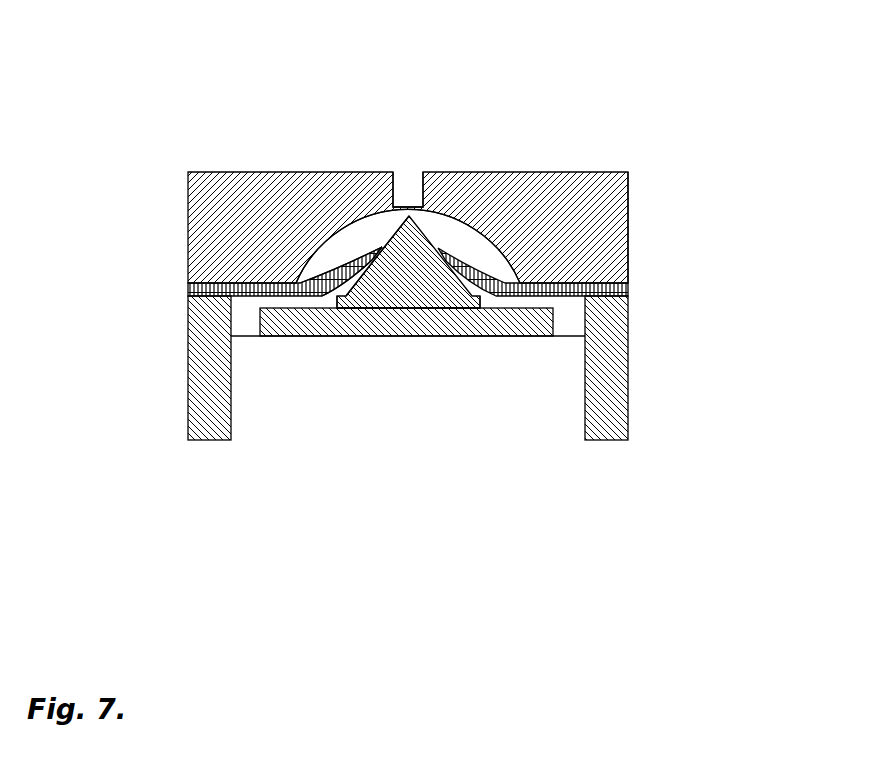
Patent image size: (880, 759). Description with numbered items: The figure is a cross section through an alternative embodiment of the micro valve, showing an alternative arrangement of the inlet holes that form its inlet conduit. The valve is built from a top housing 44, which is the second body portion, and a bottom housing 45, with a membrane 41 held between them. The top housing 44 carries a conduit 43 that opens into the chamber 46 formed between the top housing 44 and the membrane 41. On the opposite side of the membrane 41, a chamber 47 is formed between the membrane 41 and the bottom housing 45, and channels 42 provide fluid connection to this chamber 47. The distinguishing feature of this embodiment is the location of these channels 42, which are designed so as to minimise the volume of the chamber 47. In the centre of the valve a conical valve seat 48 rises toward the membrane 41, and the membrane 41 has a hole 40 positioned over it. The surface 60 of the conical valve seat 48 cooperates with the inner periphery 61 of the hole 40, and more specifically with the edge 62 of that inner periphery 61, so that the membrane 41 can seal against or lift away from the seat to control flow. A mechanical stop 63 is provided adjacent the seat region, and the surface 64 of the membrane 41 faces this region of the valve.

The hole in the membrane 40 is at (374, 236).
The membrane 41 is at (186, 290).
The channels 42 is at (562, 346).
The conduit in the top housing 43 is at (410, 168).
The top housing 44 is at (187, 170).
The bottom housing 45 is at (630, 339).
The chamber between the top housing and membrane 46 is at (488, 236).
The chamber between the membrane and the bottom housing 47 is at (318, 303).
The conical valve seat 48 is at (418, 285).
The surface of the conical valve seat 60 is at (433, 245).
The inner periphery of the hole 61 is at (383, 251).
The edge of the inner periphery 62 is at (383, 264).
The mechanical stop 63 is at (345, 304).
The surface of the membrane 64 is at (360, 274).